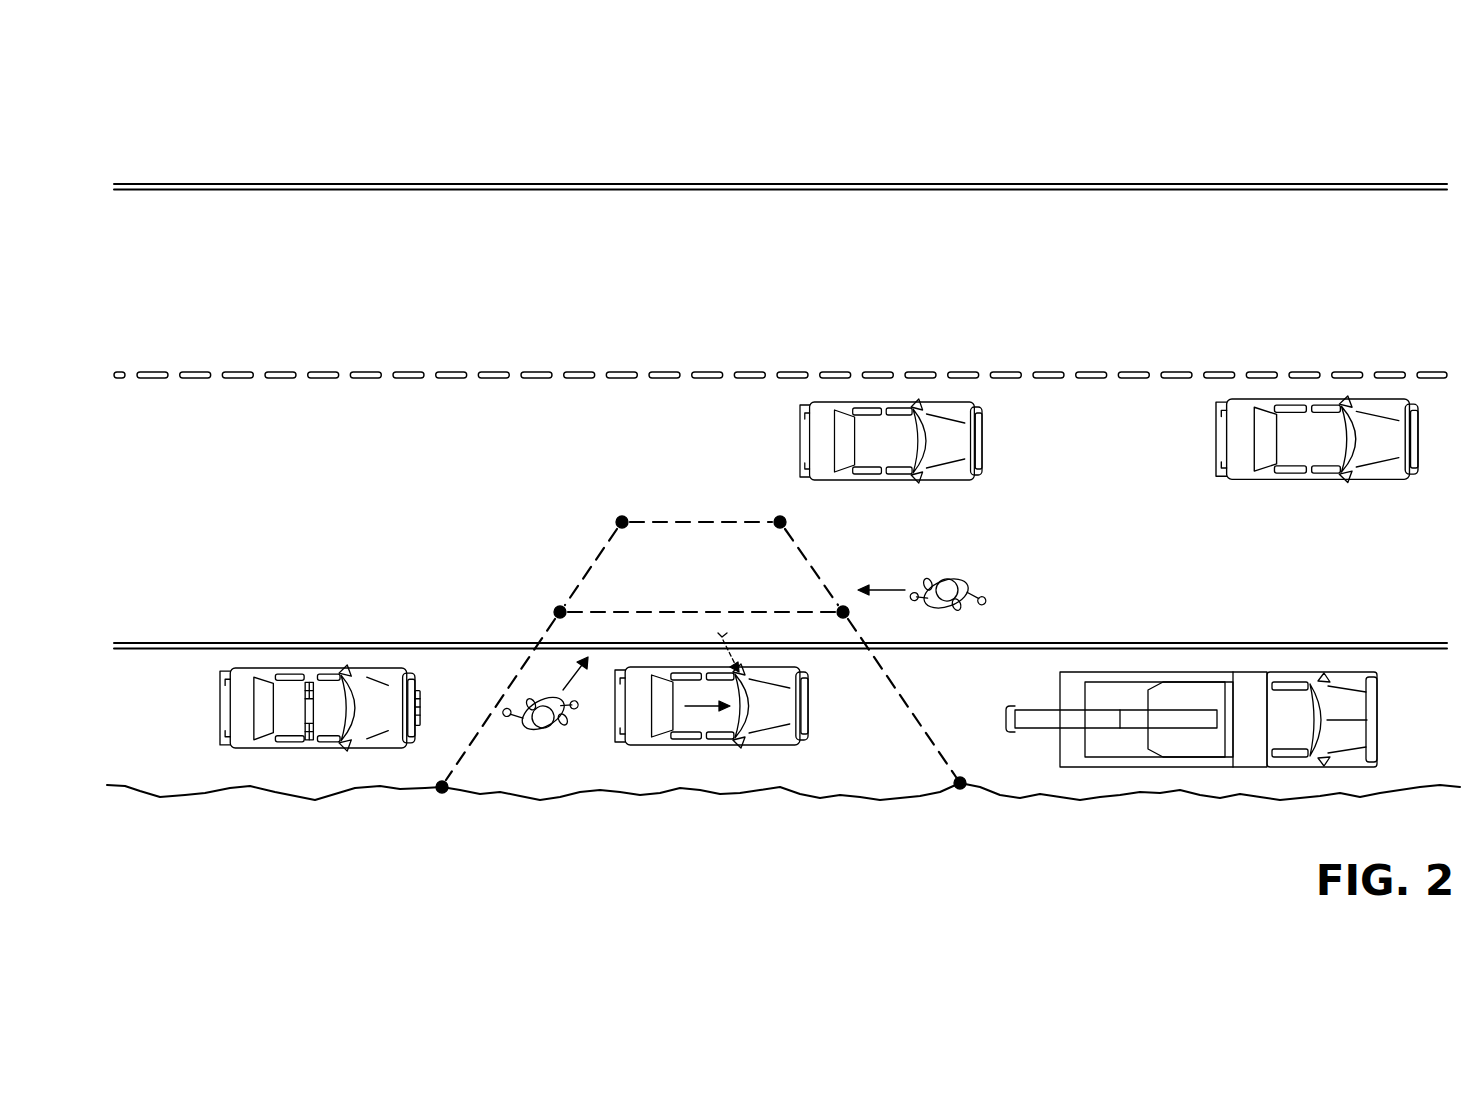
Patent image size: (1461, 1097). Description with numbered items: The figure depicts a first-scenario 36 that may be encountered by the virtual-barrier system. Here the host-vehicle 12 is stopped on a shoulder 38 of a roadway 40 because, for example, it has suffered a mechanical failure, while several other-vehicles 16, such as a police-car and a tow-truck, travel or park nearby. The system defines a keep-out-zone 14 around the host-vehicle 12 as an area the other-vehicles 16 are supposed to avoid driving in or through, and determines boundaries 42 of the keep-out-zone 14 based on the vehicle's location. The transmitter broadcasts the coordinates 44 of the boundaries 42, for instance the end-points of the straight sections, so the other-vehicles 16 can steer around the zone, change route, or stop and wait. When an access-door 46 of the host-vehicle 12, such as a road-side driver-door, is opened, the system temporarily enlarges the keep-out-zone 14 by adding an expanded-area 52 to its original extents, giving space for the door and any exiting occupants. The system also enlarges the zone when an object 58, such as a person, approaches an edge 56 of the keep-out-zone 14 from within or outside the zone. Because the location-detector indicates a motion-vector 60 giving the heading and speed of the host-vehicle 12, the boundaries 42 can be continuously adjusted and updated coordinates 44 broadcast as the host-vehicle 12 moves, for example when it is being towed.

The host-vehicle 12 is at (672, 745).
The keep-out-zone 14 is at (823, 737).
The other-vehicles 16 is at (880, 410).
The first-scenario 36 is at (1253, 82).
The shoulder 38 is at (502, 760).
The roadway 40 is at (205, 612).
The boundaries 42 is at (800, 615).
The coordinates 44 is at (443, 786).
The access-door 46 is at (722, 637).
The expanded-area 52 is at (668, 562).
The edge 56 is at (813, 568).
The object 58 is at (548, 735).
The motion-vector 60 is at (710, 706).